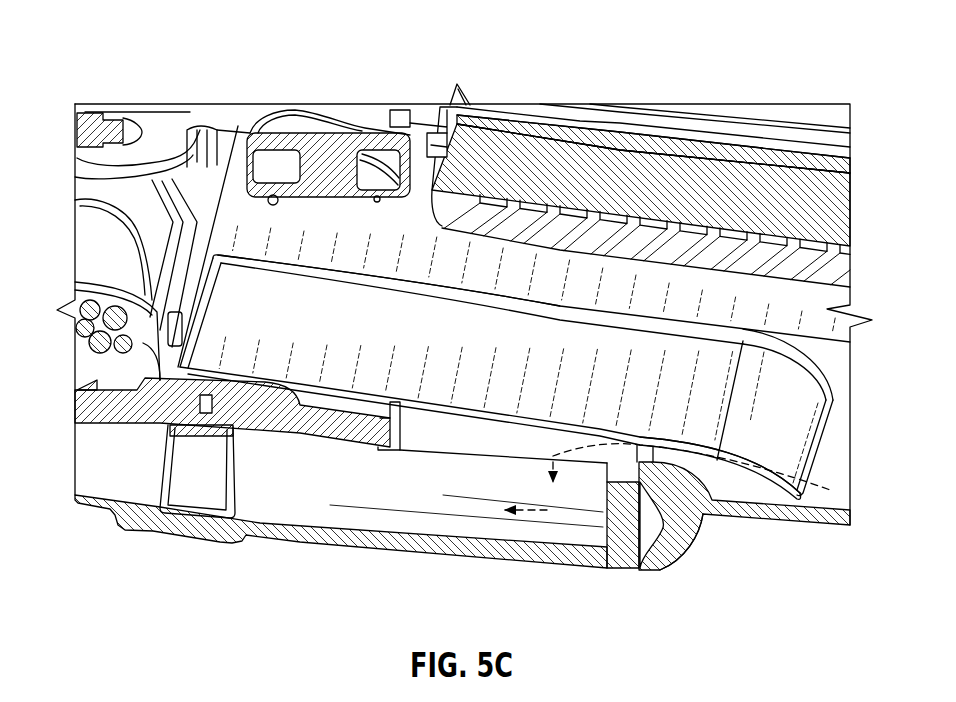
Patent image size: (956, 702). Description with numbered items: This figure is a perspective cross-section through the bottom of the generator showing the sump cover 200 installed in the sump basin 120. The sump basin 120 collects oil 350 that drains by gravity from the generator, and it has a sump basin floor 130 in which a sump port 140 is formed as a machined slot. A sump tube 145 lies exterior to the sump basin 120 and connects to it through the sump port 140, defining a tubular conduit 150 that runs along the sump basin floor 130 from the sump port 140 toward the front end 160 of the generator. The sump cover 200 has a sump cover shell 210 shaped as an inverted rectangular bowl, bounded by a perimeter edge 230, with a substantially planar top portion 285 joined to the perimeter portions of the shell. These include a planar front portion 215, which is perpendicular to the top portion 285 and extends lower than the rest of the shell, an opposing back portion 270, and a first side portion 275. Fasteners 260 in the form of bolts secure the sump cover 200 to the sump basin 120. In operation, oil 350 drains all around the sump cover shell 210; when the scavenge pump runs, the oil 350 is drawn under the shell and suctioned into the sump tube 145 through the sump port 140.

The sump basin 120 is at (827, 288).
The sump basin floor 130 is at (832, 365).
The sump port 140 is at (407, 427).
The sump tube 145 is at (455, 500).
The tubular conduit 150 is at (240, 425).
The front end 160 is at (106, 358).
The sump cover 200 is at (645, 362).
The sump cover shell 210 is at (527, 337).
The front portion 215 is at (197, 272).
The perimeter edge 230 is at (817, 455).
The fasteners 260 is at (213, 393).
The back portion 270 is at (806, 412).
The first side portion 275 is at (447, 296).
The top portion 285 is at (400, 340).
The oil 350 is at (767, 476).